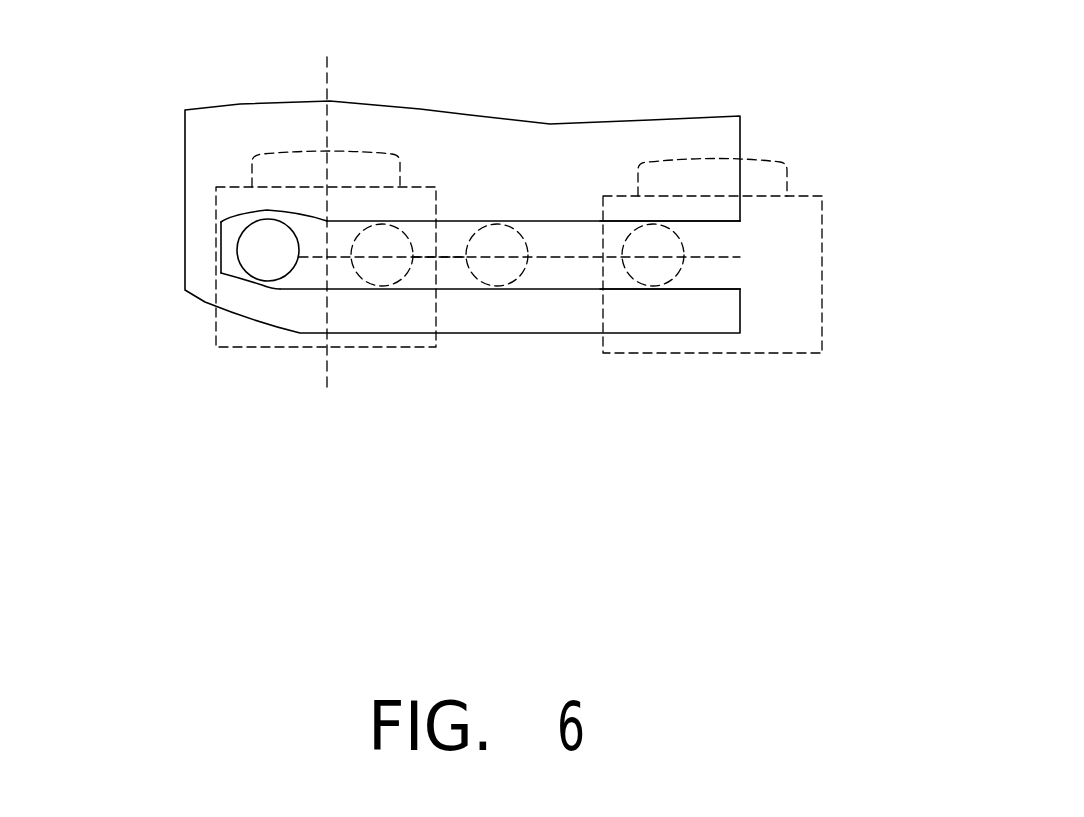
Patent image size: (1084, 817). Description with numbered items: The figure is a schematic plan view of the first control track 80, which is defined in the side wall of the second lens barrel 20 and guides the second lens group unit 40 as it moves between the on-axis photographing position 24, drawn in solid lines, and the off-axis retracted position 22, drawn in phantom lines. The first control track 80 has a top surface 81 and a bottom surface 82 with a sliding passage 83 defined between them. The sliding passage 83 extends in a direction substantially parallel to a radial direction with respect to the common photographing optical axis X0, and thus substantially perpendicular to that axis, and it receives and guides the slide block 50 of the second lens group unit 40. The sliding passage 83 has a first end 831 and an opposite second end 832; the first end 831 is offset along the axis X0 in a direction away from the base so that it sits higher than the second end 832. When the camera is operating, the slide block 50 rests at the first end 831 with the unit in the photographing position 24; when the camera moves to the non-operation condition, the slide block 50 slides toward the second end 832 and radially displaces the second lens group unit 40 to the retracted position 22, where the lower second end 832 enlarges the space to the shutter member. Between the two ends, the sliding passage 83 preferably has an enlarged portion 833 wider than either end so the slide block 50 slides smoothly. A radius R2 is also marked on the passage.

The second lens barrel 20 is at (585, 157).
The retracted position 22 is at (663, 277).
The photographing position 24 is at (243, 268).
The second lens group unit 40 is at (257, 347).
The slide block 50 is at (268, 249).
The first control track 80 is at (505, 280).
The top surface 81 is at (570, 221).
The bottom surface 82 is at (532, 289).
The sliding passage 83 is at (457, 276).
The first end 831 is at (232, 230).
The second end 832 is at (712, 222).
The enlarged portion 833 is at (300, 217).
The common photographing optical axis X0 is at (354, 208).
The radius of guide slot R2 is at (447, 258).